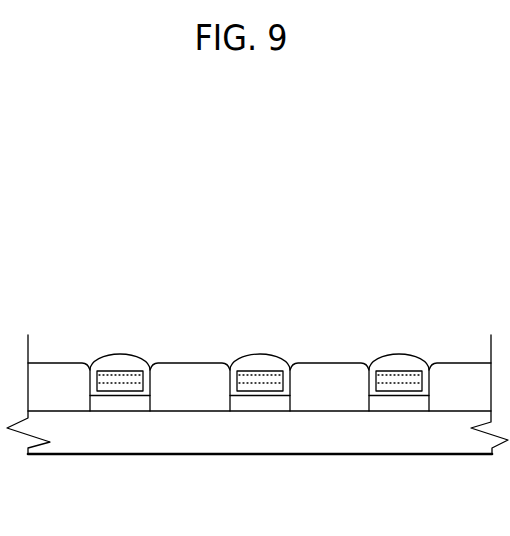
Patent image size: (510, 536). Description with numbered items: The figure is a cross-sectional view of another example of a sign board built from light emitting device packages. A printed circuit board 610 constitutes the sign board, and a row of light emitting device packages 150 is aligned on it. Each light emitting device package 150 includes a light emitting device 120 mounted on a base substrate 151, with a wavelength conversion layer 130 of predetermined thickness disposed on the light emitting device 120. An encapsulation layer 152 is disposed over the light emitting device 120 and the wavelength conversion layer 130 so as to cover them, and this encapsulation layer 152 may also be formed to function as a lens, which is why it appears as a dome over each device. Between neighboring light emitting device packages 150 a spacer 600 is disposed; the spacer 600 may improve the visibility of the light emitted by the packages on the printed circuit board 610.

The light emitting device package 150 is at (125, 373).
The base substrate 151 is at (121, 400).
The encapsulation layer 152 is at (118, 361).
The light emitting device 120 is at (132, 388).
The wavelength conversion layer 130 is at (107, 374).
The spacer 600 is at (330, 373).
The printed circuit board 610 is at (315, 445).